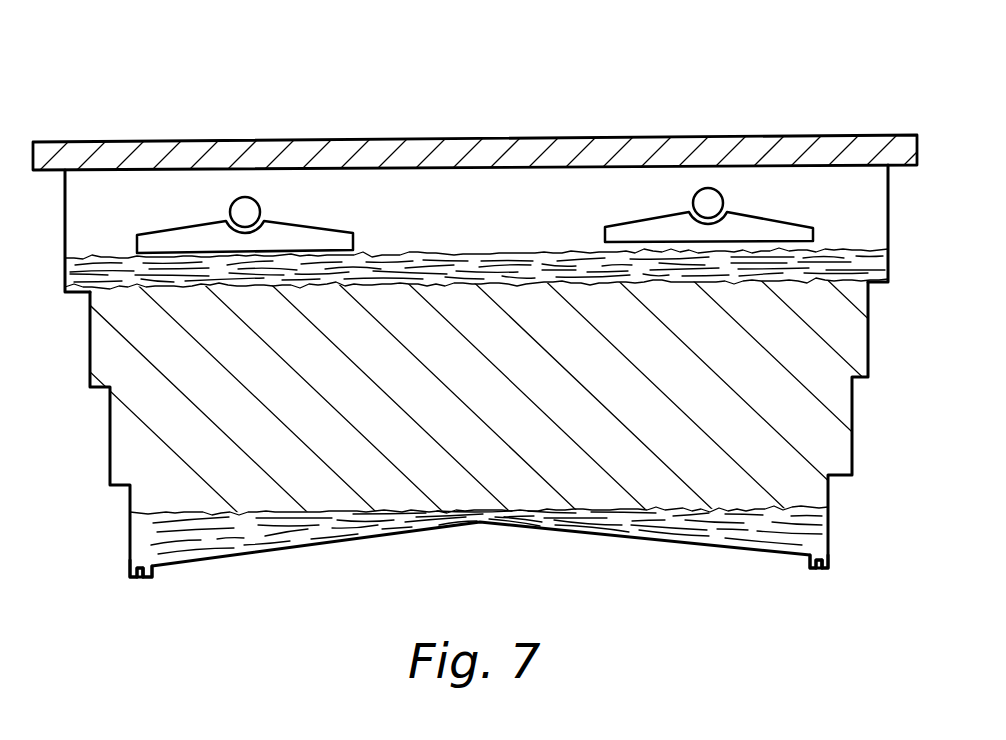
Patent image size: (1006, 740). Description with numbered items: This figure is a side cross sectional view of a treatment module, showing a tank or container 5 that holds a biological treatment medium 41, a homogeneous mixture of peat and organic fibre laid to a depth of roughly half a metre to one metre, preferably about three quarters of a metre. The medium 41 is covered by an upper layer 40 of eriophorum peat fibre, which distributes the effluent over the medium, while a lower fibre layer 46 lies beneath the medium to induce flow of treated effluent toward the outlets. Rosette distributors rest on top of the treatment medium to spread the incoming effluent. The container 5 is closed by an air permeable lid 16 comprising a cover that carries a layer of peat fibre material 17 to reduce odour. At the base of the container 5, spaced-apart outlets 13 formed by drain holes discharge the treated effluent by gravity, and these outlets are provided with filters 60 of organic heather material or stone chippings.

The container 5 is at (868, 337).
The outlets 13 is at (130, 566).
The air permeable lid 16 is at (888, 135).
The layer of peat fibre material 17 is at (688, 150).
The layer of eriophorum peat fibre 40 is at (870, 265).
The biological treatment medium 41 is at (815, 377).
The lower fibre layer 46 is at (800, 525).
The filters 60 is at (143, 578).